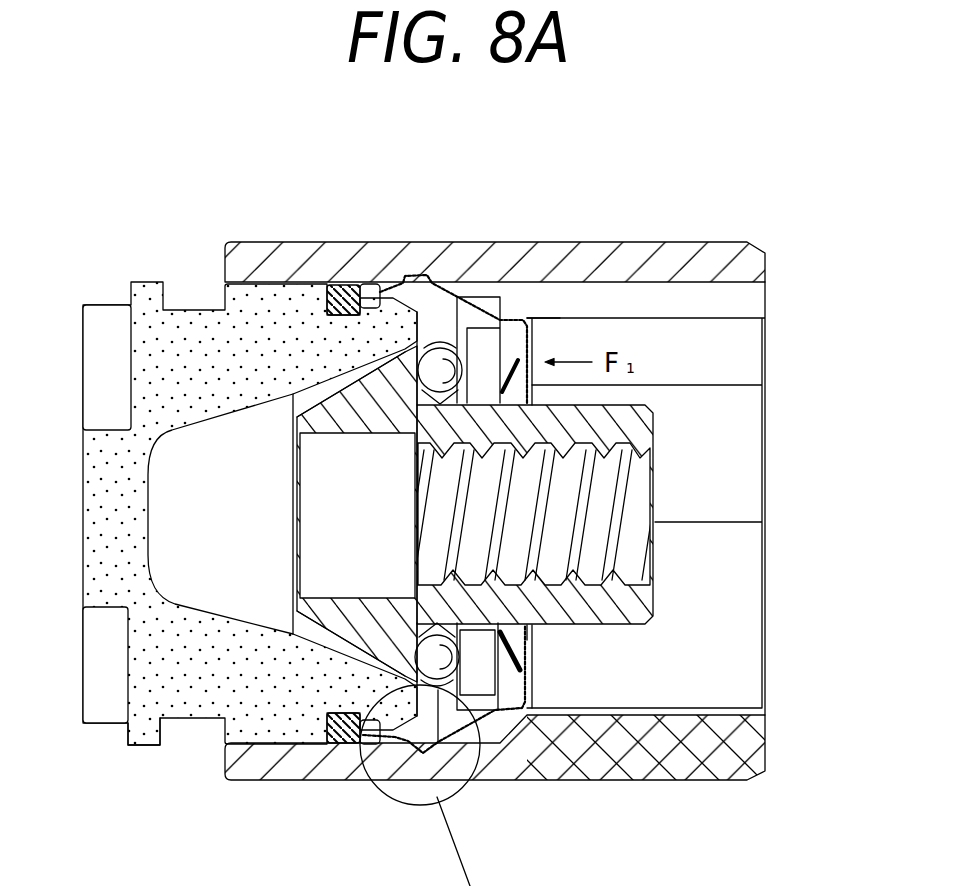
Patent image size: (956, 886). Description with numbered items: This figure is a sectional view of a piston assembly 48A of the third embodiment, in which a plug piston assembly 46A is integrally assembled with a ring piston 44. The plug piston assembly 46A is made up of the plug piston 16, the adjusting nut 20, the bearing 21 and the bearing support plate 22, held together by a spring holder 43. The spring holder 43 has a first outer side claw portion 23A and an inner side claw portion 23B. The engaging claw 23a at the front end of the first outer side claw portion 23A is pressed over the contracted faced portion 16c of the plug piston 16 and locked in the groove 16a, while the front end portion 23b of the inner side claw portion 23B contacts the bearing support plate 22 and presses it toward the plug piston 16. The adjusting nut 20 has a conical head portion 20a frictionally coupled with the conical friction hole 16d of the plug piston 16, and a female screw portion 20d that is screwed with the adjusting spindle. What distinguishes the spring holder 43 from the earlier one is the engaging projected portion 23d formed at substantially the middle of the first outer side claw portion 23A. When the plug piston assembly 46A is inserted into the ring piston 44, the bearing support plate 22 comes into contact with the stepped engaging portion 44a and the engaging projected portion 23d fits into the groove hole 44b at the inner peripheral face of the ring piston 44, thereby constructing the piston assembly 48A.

The piston assembly 48A is at (534, 228).
The plug piston 16 is at (167, 673).
The groove 16a is at (368, 742).
The faced portion 16c is at (400, 745).
The conical friction hole 16d is at (450, 283).
The adjusting nut 20 is at (372, 634).
The conical head portion 20a is at (337, 625).
The female screw portion 20d is at (617, 585).
The bearing 21 is at (475, 668).
The bearing support plate 22 is at (497, 712).
The engaging claw 23a is at (367, 283).
The front end portion 23b is at (530, 641).
The first outer side claw portion 23A is at (523, 283).
The inner side claw portion 23B is at (532, 679).
The engaging projected portion 23d is at (420, 283).
The spring holder 43 is at (535, 697).
The ring piston 44 is at (694, 733).
The stepped engaging portion 44a is at (500, 717).
The groove hole 44b is at (430, 752).
The plug piston assembly 46A is at (142, 752).